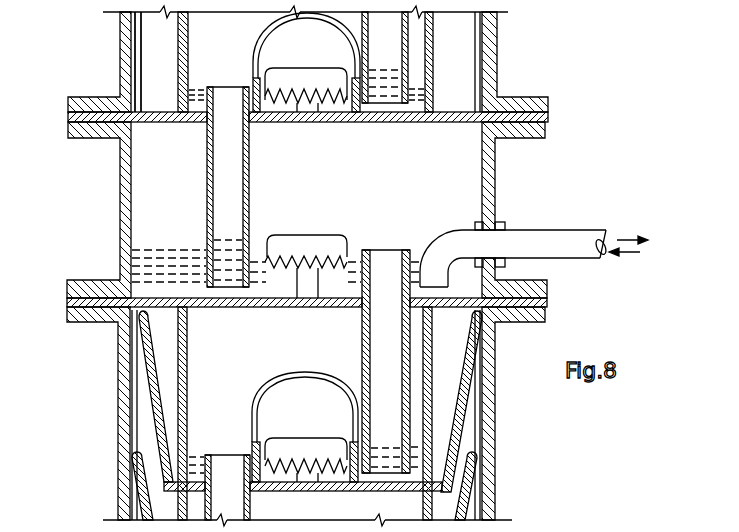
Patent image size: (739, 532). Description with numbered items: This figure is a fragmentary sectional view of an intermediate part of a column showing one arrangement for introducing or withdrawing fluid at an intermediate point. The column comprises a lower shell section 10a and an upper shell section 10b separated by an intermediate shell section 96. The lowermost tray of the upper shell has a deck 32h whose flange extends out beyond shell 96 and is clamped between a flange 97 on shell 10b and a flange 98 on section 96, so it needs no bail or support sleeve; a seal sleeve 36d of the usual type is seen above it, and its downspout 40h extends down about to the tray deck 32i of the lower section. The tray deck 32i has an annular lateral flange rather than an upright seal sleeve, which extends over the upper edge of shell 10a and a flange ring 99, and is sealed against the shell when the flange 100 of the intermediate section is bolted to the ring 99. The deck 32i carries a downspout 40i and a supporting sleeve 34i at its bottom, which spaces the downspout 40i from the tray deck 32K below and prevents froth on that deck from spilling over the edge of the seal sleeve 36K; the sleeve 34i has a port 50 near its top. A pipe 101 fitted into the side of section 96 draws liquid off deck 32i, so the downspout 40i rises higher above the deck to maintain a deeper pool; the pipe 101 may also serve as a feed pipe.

The seal sleeve 36d is at (132, 70).
The upper shell section 10b is at (490, 48).
The flange 97 is at (548, 100).
The flange 98 is at (545, 128).
The deck 32h is at (354, 122).
The downspout 40h is at (207, 231).
The intermediate shell section 96 is at (492, 205).
The pipe 101 is at (563, 232).
The flange 100 is at (548, 287).
The flange ring 99 is at (546, 317).
The port 50 is at (188, 325).
The tray deck 32i is at (268, 300).
The downspout 40i is at (362, 338).
The seal sleeve 36K is at (148, 362).
The supporting sleeve 34i is at (188, 405).
The lower shell section 10a is at (495, 423).
The tray deck 32K is at (283, 492).